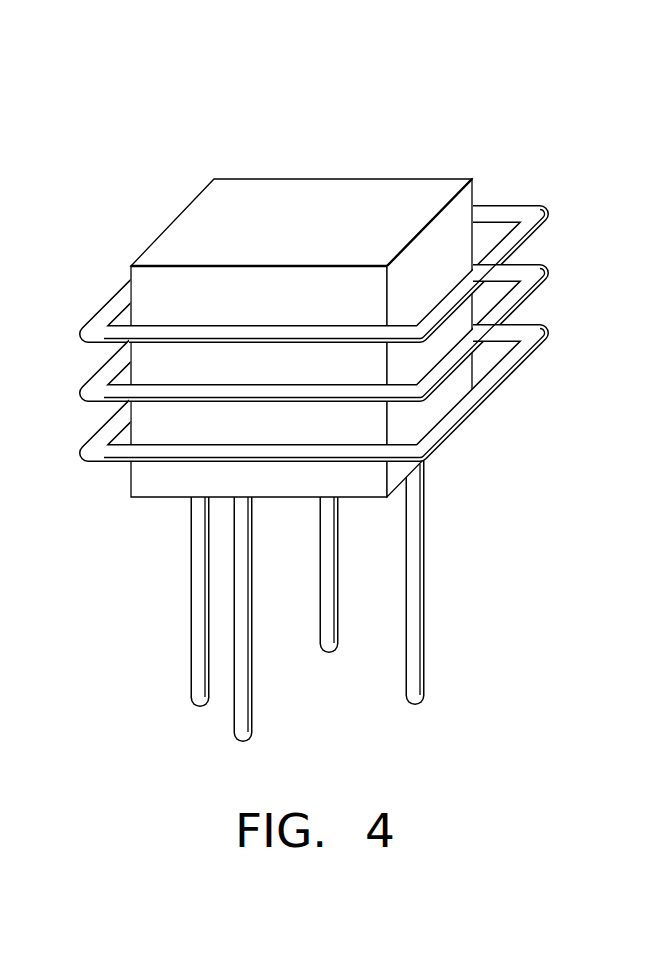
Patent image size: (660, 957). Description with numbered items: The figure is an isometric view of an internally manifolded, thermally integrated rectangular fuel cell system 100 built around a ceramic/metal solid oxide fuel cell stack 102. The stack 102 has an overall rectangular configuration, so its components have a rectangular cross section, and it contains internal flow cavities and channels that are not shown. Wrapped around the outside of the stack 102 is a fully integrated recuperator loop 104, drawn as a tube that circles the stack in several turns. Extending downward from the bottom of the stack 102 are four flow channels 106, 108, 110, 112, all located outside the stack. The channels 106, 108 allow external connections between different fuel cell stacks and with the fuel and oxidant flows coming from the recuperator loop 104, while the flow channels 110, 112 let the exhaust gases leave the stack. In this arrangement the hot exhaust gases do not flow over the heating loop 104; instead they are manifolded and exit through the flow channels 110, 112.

The fuel cell system 100 is at (352, 403).
The fuel cell stack 102 is at (278, 200).
The recuperator loop 104 is at (514, 298).
The flow channel 106 is at (192, 672).
The flow channel 108 is at (253, 722).
The flow channel 110 is at (425, 680).
The flow channel 112 is at (339, 625).